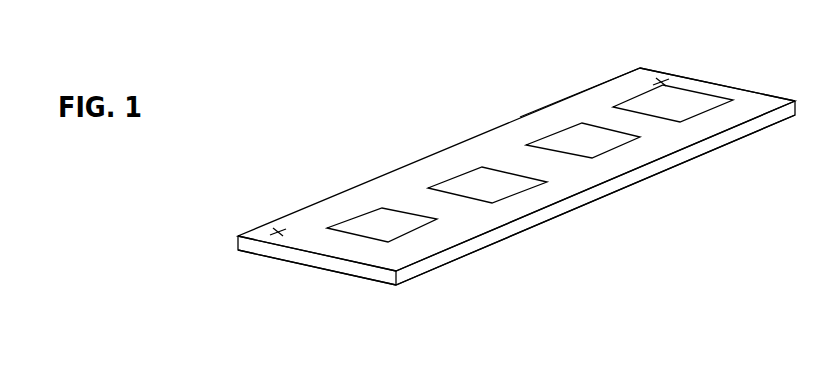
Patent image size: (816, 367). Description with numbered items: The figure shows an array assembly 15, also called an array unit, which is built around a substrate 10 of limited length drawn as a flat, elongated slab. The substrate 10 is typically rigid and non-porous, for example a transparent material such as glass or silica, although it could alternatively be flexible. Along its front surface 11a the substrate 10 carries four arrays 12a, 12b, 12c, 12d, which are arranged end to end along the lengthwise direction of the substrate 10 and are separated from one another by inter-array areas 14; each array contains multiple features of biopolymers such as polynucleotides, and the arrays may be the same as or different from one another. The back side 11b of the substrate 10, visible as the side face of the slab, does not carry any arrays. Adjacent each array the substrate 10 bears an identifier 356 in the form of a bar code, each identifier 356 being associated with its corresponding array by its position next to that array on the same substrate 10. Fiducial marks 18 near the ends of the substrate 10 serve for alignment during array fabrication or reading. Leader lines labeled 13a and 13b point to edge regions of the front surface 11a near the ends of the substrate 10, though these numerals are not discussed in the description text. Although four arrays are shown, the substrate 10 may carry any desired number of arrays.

The substrate 10 is at (406, 281).
The front surface 11a is at (307, 213).
The back side 11b is at (580, 208).
The array 12a is at (377, 217).
The array 12b is at (473, 182).
The array 12c is at (602, 137).
The array 12d is at (643, 103).
The first edge region 13a is at (705, 130).
The second edge region 13b is at (573, 108).
The inter-array area 14 is at (523, 162).
The array assembly 15 is at (290, 284).
The fiducial mark 18 is at (278, 232).
The identifier 356 is at (425, 255).